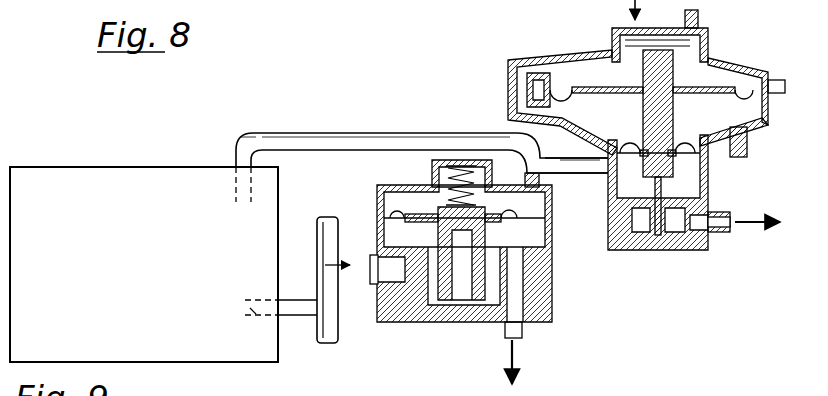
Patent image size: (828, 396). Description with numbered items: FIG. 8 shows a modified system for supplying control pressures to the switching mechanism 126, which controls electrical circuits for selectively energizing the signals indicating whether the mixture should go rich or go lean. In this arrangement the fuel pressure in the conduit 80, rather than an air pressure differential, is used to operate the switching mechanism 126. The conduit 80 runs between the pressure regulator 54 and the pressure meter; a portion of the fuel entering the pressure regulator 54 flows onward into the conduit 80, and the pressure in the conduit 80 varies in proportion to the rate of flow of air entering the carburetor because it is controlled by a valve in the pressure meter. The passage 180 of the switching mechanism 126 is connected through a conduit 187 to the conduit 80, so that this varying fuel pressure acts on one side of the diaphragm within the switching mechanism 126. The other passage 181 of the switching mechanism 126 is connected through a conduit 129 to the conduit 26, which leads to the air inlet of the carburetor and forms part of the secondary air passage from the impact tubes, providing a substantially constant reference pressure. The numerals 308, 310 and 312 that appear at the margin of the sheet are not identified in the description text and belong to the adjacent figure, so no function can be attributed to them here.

In FIG. 8, the switching mechanism 126 is at (140, 258).
In FIG. 8, the passage 180 is at (243, 190).
In FIG. 8, the conduit 80 is at (575, 166).
In FIG. 8, the conduit 26 is at (336, 330).
In FIG. 8, the conduit 129 is at (290, 306).
In FIG. 8, the passage 181 is at (258, 320).
In FIG. 8, the pressure regulator 54 is at (413, 179).
In FIG. 8, the conduit 187 is at (452, 140).
In FIG. 9, the element 308 is at (164, 391).
In FIG. 9, the element 310 is at (215, 386).
In FIG. 9, the element 312 is at (365, 395).